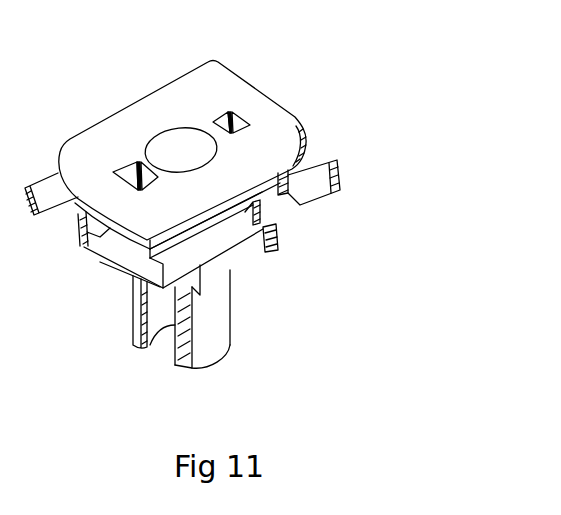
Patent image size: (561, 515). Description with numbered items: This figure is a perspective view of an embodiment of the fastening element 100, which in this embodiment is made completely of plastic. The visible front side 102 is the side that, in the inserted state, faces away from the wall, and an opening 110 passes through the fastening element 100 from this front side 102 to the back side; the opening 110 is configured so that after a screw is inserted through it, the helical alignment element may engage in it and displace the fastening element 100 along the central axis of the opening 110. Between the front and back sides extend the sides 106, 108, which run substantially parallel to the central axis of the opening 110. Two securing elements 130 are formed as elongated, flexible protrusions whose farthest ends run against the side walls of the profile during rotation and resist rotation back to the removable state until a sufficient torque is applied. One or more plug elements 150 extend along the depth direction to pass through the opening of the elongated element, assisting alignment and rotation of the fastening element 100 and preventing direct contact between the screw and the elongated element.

The fastening element 100 is at (297, 63).
The front side 102 is at (206, 98).
The side 106 is at (268, 201).
The side 108 is at (87, 247).
The opening 110 is at (184, 154).
The securing element 130 is at (38, 186).
The plug element 150 is at (140, 345).